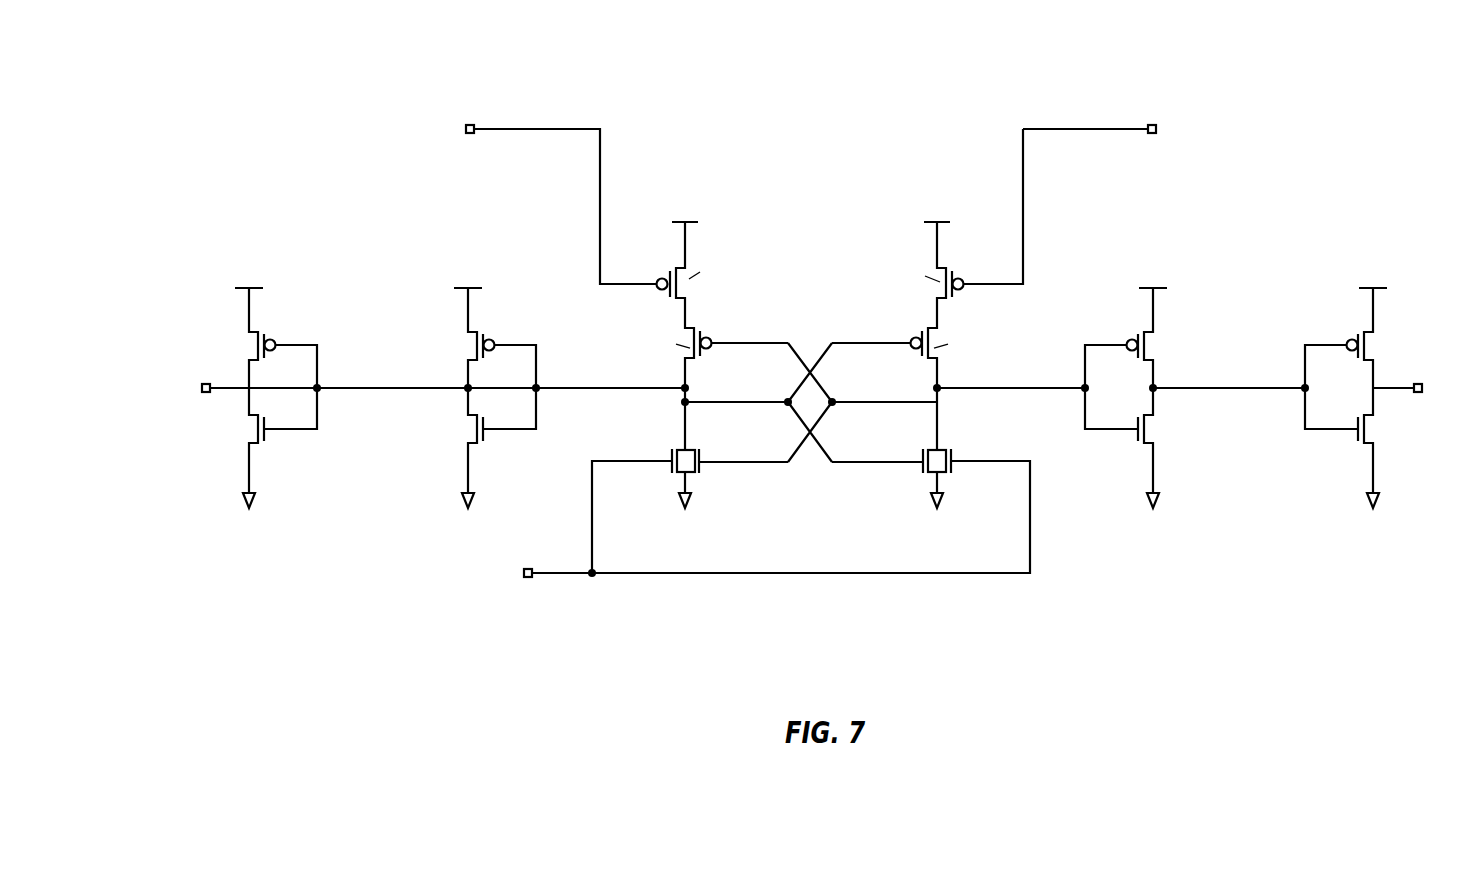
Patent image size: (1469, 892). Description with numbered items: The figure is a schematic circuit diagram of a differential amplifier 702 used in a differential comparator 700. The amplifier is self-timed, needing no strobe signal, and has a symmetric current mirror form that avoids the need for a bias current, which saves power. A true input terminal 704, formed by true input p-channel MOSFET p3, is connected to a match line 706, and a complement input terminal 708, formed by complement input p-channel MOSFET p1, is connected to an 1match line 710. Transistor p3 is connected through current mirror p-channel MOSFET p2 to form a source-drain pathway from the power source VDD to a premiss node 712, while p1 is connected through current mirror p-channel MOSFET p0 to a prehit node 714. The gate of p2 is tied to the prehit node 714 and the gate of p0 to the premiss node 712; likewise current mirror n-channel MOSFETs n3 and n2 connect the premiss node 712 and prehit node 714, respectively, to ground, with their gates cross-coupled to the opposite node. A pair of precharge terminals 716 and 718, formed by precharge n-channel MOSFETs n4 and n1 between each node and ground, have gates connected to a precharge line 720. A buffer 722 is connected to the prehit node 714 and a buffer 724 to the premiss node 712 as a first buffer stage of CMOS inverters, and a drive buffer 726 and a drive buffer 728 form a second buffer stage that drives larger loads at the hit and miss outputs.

The differential comparator 700 is at (453, 62).
The differential amplifier 702 is at (1116, 254).
The true input terminal 704 is at (474, 125).
The match line 706 is at (602, 147).
The complement input terminal 708 is at (958, 266).
The 1match line 710 is at (1050, 129).
The premiss node 712 is at (668, 401).
The prehit node 714 is at (952, 401).
The precharge terminal 716 is at (925, 448).
The precharge terminal 718 is at (697, 448).
The precharge line 720 is at (756, 576).
The buffer 722 is at (1083, 420).
The buffer 724 is at (538, 418).
The drive buffer 726 is at (1303, 420).
The drive buffer 728 is at (319, 418).